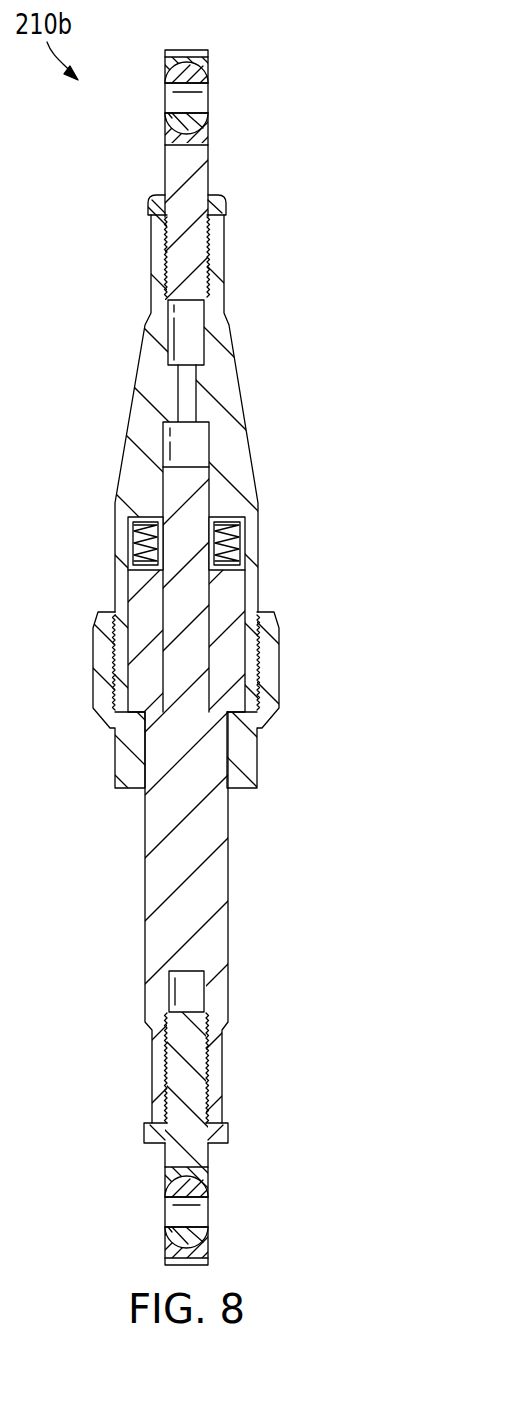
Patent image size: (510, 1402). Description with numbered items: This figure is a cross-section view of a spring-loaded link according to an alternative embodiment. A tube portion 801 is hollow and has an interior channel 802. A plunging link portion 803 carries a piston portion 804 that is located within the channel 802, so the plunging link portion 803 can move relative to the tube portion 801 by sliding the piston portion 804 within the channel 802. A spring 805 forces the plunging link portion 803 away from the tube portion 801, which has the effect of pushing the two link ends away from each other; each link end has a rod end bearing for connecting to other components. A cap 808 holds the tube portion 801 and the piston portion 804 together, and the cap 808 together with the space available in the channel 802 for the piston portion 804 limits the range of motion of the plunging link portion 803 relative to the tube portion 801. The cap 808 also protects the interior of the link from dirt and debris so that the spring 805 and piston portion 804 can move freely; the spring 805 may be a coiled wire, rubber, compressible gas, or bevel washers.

The tube portion 801 is at (140, 417).
The interior channel 802 is at (202, 432).
The plunging link portion 803 is at (155, 860).
The piston portion 804 is at (202, 492).
The spring 805 is at (237, 535).
The cap 808 is at (268, 672).